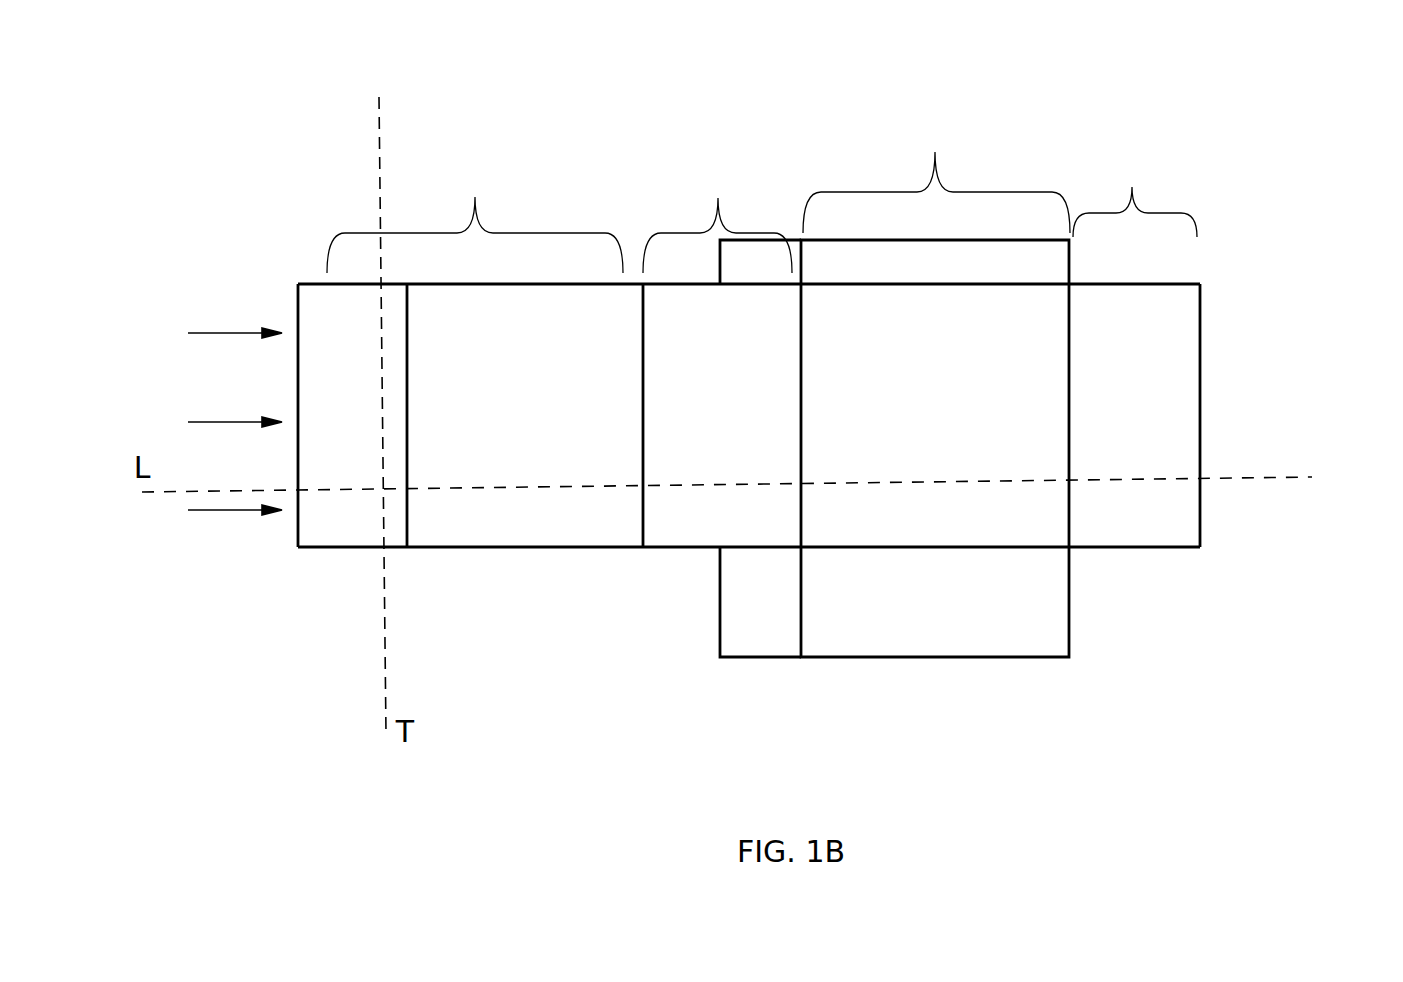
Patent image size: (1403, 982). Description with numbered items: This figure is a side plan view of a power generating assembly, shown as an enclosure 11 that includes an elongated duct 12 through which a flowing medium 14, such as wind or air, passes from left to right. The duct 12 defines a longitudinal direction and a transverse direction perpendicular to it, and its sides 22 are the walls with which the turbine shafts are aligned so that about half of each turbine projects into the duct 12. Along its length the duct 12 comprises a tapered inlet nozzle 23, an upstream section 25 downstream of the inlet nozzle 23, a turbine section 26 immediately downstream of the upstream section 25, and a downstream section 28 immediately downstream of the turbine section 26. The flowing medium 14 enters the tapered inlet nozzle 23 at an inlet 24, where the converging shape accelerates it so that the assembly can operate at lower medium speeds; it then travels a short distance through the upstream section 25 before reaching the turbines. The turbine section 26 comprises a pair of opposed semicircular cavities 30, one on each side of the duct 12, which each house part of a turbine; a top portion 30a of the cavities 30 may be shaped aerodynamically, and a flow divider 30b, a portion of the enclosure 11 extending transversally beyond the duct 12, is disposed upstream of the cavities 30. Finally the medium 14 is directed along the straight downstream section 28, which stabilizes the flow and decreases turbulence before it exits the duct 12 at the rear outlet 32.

The enclosure 11 is at (507, 550).
The elongated duct 12 is at (527, 283).
The flowing medium 14 is at (235, 421).
The sides of the duct 22 is at (693, 347).
The tapered inlet nozzle 23 is at (475, 352).
The inlet 24 is at (293, 315).
The upstream section 25 is at (717, 213).
The turbine section 26 is at (936, 170).
The downstream section 28 is at (1135, 188).
The semicircular cavities 30 is at (820, 420).
The top portion 30a is at (823, 263).
The flow divider 30b is at (718, 270).
The outlet 32 is at (1203, 424).